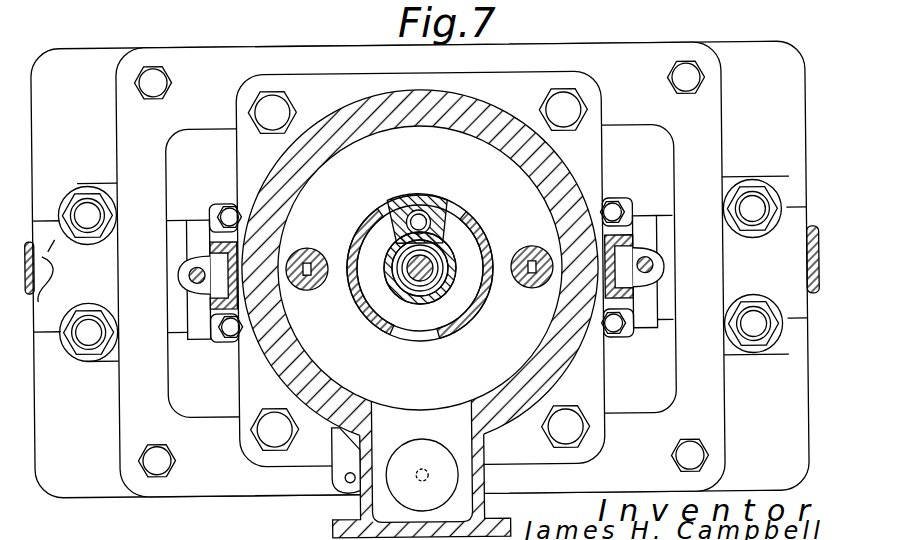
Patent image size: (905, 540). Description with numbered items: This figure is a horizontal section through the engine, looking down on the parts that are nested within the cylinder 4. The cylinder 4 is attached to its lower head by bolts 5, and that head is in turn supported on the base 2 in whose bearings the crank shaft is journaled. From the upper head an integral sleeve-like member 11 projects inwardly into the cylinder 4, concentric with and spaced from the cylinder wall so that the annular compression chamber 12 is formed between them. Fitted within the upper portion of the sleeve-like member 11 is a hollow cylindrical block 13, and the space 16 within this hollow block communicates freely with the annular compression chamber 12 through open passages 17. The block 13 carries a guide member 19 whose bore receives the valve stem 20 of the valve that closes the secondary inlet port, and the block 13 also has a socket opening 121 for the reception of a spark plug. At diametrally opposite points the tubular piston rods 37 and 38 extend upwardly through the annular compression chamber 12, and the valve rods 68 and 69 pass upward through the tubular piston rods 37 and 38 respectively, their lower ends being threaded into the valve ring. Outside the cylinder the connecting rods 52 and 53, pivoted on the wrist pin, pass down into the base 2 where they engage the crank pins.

The base 2 is at (118, 118).
The cylinder 4 is at (406, 120).
The bolts 5 is at (575, 104).
The sleeve-like member 11 is at (420, 341).
The annular compression chamber 12 is at (448, 150).
The hollow cylindrical block 13 is at (460, 322).
The space within the hollow block 16 is at (385, 315).
The open passages 17 is at (375, 230).
The guide member 19 is at (447, 257).
The valve stem 20 is at (387, 260).
The tubular piston rod 37 is at (305, 247).
The tubular piston rod 38 is at (530, 290).
The connecting rod 52 is at (202, 253).
The connecting rod 53 is at (618, 238).
The valve rod 68 is at (310, 290).
The valve rod 69 is at (533, 247).
The socket opening 121 is at (423, 200).